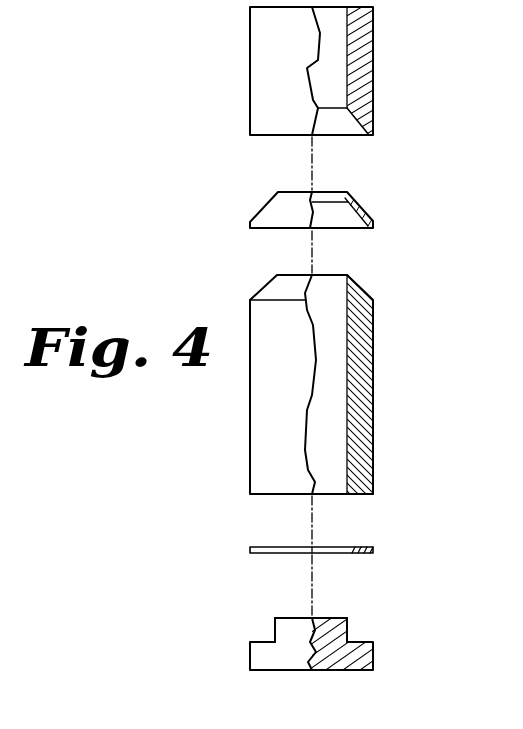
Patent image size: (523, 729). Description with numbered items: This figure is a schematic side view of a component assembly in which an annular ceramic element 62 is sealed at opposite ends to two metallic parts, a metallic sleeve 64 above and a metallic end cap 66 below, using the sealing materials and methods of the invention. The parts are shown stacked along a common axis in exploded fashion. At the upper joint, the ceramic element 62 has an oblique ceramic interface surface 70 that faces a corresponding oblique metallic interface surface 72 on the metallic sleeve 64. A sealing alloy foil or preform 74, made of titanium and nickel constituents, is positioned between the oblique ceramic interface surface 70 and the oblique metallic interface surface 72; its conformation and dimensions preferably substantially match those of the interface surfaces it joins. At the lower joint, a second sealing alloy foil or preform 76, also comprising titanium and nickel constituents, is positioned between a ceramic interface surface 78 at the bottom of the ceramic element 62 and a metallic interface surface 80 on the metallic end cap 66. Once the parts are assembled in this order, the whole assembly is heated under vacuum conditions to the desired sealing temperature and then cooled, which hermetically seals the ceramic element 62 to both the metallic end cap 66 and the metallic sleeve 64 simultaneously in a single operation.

The annular ceramic element 62 is at (373, 348).
The metallic sleeve 64 is at (373, 70).
The metallic end cap 66 is at (358, 660).
The oblique ceramic interface surface 70 is at (362, 283).
The oblique metallic interface surface 72 is at (357, 127).
The sealing alloy foil or preform 74 is at (360, 199).
The sealing alloy foil or preform 76 is at (360, 553).
The ceramic interface surface 78 is at (360, 494).
The metallic interface surface 80 is at (365, 642).